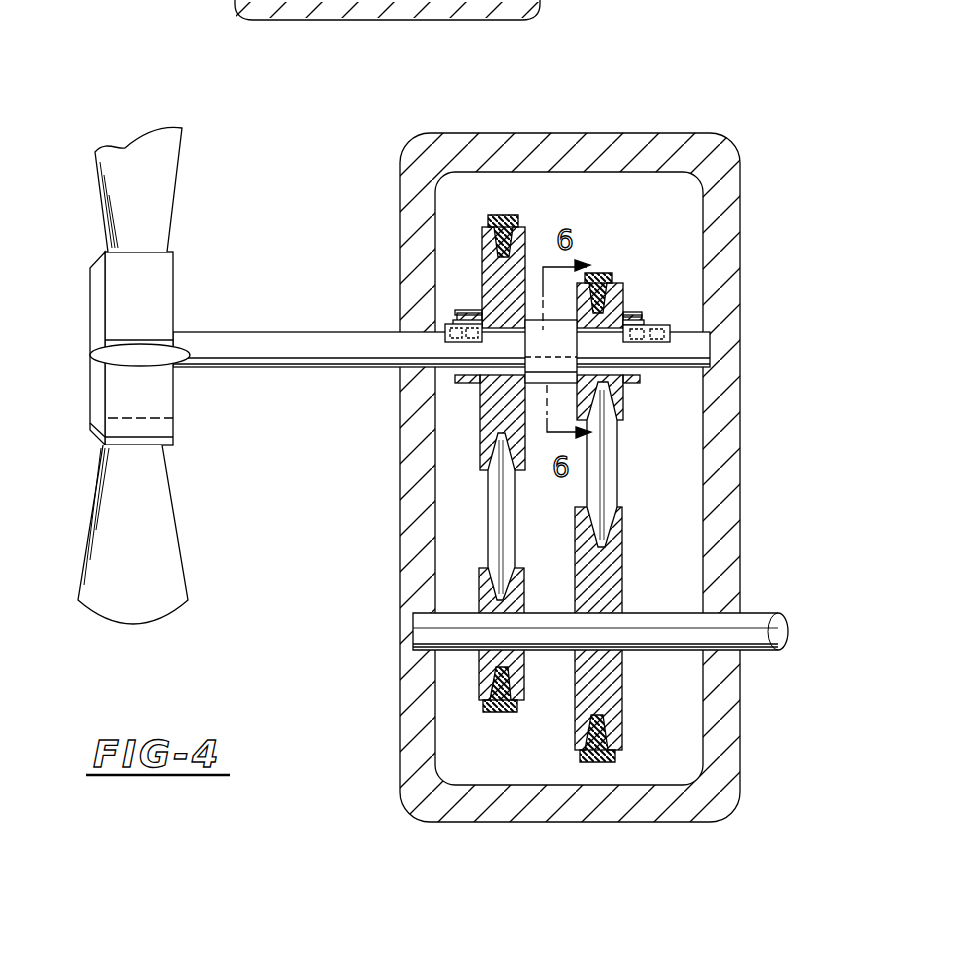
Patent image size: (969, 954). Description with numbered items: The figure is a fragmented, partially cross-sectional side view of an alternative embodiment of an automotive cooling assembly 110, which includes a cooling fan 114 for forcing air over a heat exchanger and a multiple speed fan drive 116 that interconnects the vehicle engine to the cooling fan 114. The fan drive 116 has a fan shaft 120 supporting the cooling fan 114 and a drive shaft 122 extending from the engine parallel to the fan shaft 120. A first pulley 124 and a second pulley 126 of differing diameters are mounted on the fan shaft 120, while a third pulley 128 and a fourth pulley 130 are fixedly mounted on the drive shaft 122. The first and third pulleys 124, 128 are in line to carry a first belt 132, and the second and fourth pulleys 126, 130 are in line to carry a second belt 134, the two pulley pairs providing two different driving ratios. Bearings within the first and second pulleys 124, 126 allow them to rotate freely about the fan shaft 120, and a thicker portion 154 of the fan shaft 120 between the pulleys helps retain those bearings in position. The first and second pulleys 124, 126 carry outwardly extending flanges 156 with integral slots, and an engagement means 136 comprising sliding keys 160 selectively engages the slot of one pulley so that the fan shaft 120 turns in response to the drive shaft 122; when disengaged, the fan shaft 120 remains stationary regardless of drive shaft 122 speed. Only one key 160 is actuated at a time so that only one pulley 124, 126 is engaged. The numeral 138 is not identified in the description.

The automotive cooling assembly 110 is at (303, 537).
The cooling fan 114 is at (162, 173).
The multiple speed fan drive 116 is at (762, 138).
The fan shaft 120 is at (247, 347).
The drive shaft 122 is at (772, 620).
The first pulley 124 is at (525, 232).
The second pulley 126 is at (627, 293).
The third pulley 128 is at (492, 672).
The fourth pulley 130 is at (624, 716).
The first belt 132 is at (488, 492).
The second belt 134 is at (622, 457).
The engagement means 136 is at (472, 302).
The housing wall 138 is at (727, 413).
The thicker portion 154 is at (570, 346).
The outwardly extending flanges 156 is at (457, 325).
The sliding key 160 is at (446, 325).